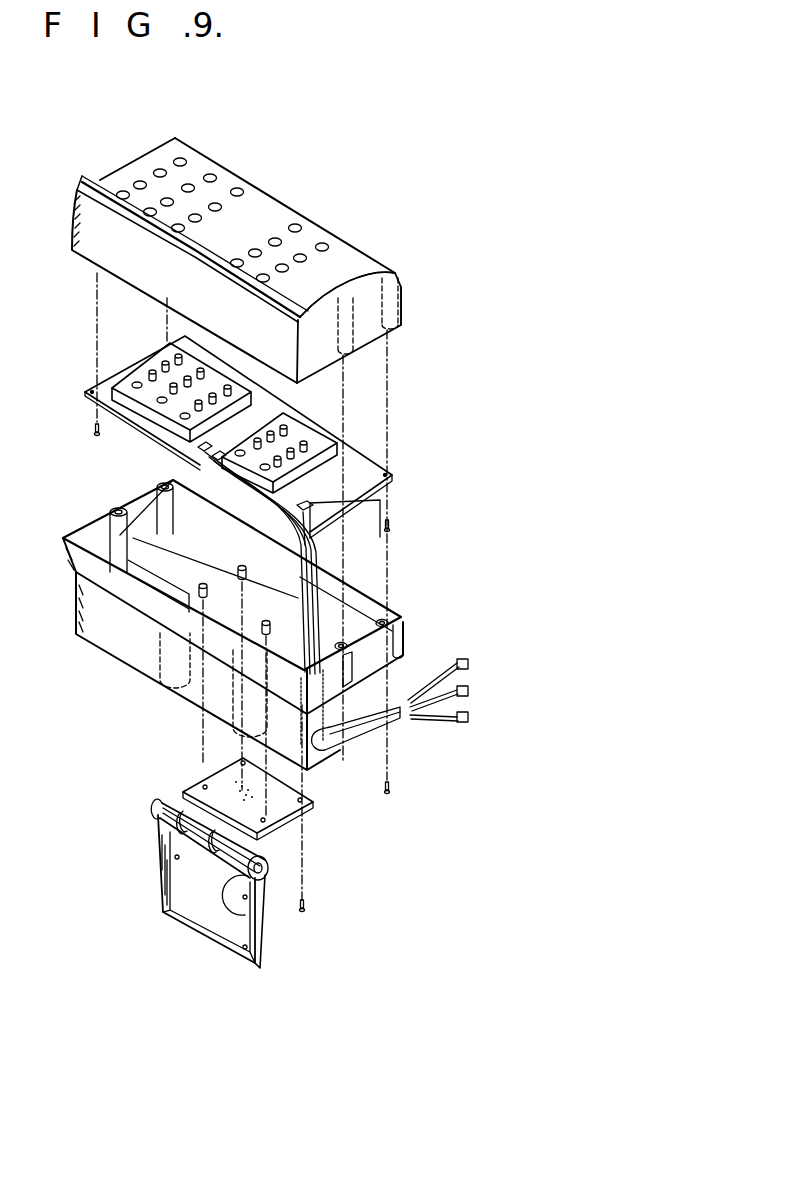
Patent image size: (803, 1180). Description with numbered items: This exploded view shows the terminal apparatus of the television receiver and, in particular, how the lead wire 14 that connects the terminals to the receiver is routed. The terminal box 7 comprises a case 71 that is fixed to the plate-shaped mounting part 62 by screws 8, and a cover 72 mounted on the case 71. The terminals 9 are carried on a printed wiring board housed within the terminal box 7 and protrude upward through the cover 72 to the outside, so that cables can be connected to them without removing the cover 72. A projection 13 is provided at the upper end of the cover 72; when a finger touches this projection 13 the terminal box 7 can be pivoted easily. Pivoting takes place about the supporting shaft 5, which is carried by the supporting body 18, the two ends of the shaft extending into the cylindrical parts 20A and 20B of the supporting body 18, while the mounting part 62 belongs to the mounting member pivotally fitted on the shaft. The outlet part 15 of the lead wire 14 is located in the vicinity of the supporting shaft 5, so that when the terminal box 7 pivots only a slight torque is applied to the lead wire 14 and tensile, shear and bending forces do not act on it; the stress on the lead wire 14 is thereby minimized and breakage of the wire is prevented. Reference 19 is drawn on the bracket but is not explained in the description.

The cover 72 is at (358, 247).
The projection 13 is at (387, 270).
The terminal box 7 is at (405, 308).
The terminals 9 is at (152, 348).
The lead wire 14 is at (337, 572).
The case 71 is at (92, 518).
The outlet part 15 is at (309, 745).
The mounting part 62 is at (217, 760).
The cylindrical part 20A is at (160, 805).
The cylindrical part 20B is at (248, 918).
The supporting shaft 5 is at (262, 866).
The screw 8 is at (306, 908).
The supporting body 18 is at (215, 948).
The bracket side 19 is at (263, 948).